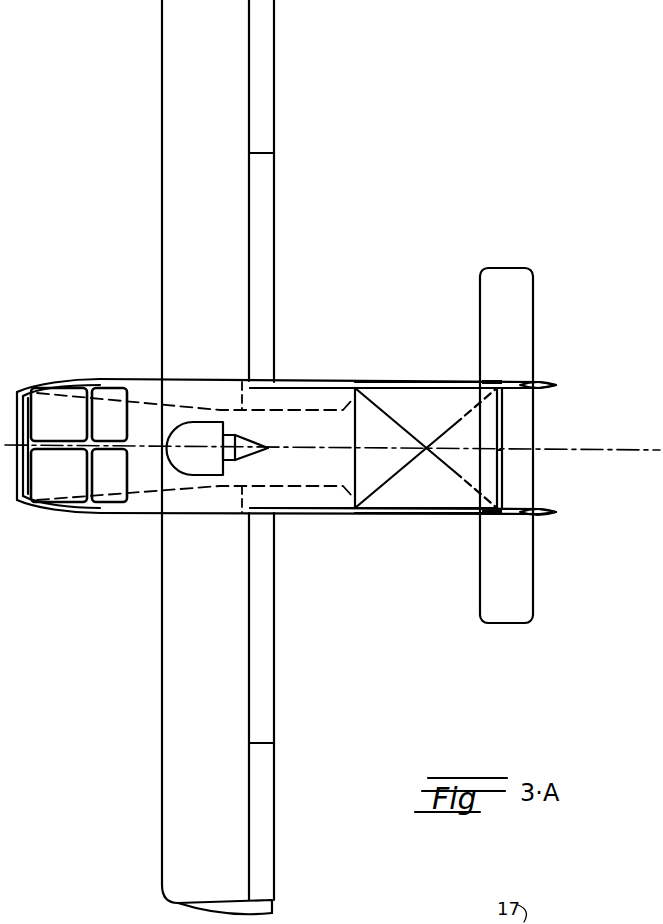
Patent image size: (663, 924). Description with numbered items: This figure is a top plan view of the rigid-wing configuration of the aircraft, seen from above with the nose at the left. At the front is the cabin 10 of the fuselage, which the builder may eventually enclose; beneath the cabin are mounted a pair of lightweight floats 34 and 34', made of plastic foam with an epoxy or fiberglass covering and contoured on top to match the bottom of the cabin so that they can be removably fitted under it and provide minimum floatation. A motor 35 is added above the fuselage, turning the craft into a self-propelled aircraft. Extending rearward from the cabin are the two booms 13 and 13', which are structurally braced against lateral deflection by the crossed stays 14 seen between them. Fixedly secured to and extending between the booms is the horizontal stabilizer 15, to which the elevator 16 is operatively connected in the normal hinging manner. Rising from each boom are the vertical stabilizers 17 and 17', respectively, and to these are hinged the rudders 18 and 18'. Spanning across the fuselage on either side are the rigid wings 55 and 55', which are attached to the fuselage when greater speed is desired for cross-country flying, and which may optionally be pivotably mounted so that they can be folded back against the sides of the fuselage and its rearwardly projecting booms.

The cabin 10 is at (135, 519).
The boom 13 is at (426, 535).
The boom 13' is at (426, 355).
The stays 14 is at (443, 427).
The horizontal stabilizer 15 is at (487, 468).
The elevator 16 is at (523, 320).
The vertical stabilizer 17 is at (476, 540).
The vertical stabilizer 17' is at (470, 366).
The rudder 18 is at (568, 526).
The rudder 18' is at (565, 397).
The float 34 is at (302, 533).
The float 34' is at (304, 364).
The motor 35 is at (193, 430).
The rigid wing 55 is at (178, 647).
The rigid wing 55' is at (270, 191).